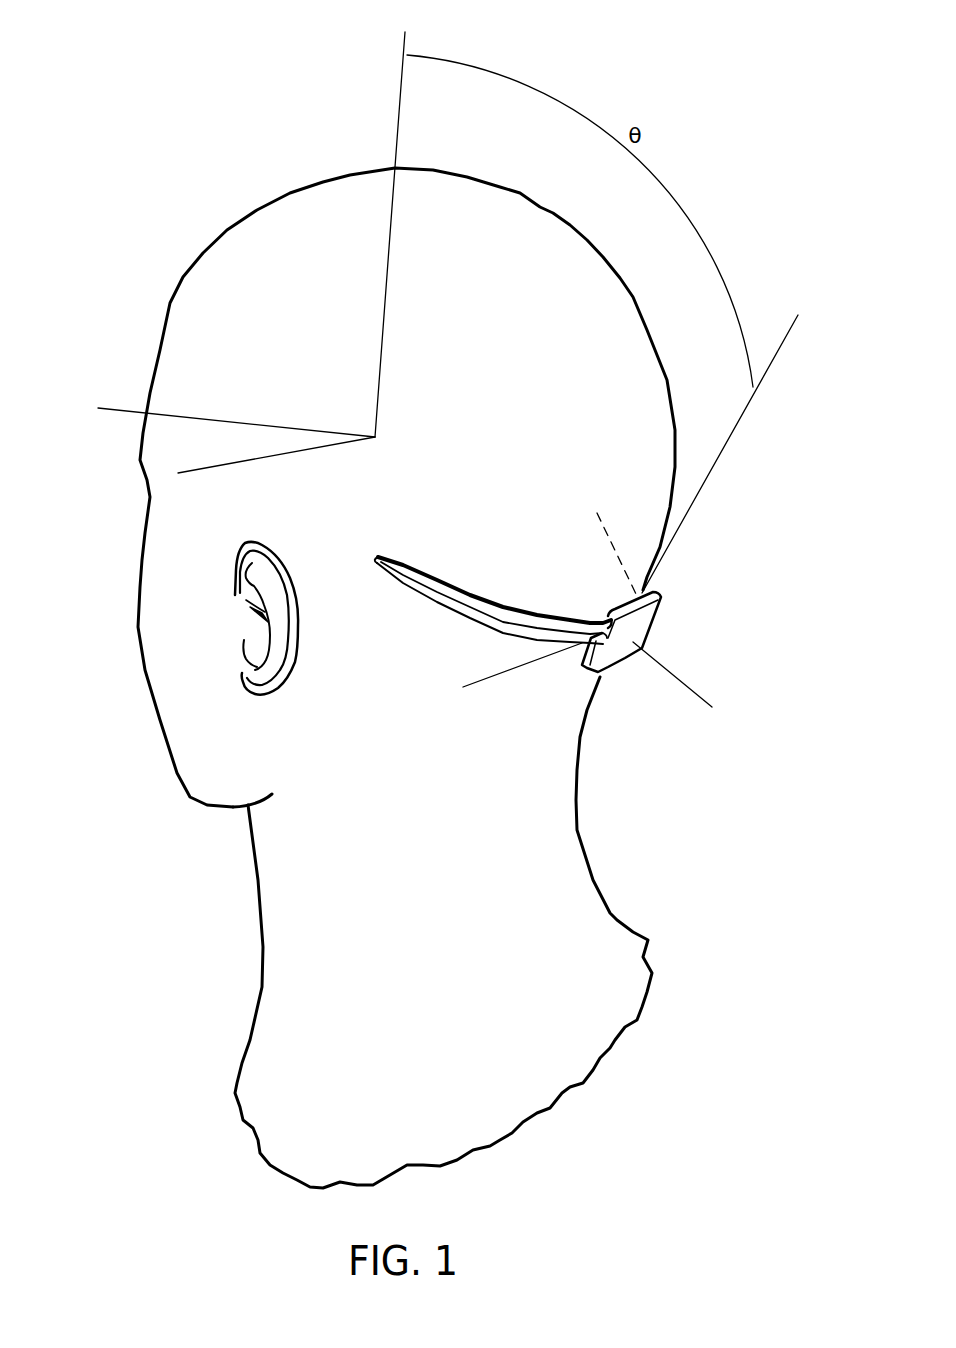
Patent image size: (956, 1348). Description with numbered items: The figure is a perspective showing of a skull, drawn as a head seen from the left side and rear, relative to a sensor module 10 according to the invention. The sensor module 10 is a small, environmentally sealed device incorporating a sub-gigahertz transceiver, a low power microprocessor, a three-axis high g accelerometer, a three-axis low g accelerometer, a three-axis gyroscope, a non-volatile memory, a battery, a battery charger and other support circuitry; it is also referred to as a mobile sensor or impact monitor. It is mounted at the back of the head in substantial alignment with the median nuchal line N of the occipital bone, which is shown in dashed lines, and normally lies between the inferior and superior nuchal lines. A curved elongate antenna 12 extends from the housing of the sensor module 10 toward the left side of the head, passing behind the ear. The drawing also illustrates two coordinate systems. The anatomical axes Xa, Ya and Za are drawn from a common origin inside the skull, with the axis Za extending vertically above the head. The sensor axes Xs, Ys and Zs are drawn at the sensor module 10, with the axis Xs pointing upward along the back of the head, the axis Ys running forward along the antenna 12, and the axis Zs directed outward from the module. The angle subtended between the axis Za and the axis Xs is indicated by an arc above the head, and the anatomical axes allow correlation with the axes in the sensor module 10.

The sensor module 10 is at (657, 630).
The curved elongate antenna 12 is at (495, 602).
The anatomical axis Za is at (397, 221).
The anatomical axis Xa is at (220, 416).
The anatomical axis Ya is at (259, 462).
The sensor axis Xs is at (727, 439).
The sensor axis Ys is at (506, 672).
The sensor axis Zs is at (686, 688).
The median nuchal line N is at (610, 536).